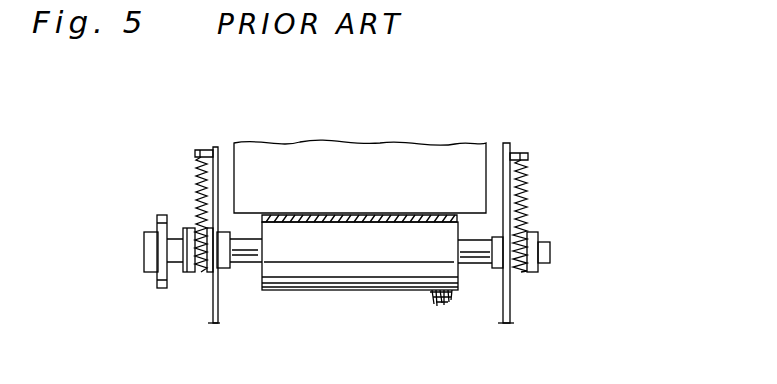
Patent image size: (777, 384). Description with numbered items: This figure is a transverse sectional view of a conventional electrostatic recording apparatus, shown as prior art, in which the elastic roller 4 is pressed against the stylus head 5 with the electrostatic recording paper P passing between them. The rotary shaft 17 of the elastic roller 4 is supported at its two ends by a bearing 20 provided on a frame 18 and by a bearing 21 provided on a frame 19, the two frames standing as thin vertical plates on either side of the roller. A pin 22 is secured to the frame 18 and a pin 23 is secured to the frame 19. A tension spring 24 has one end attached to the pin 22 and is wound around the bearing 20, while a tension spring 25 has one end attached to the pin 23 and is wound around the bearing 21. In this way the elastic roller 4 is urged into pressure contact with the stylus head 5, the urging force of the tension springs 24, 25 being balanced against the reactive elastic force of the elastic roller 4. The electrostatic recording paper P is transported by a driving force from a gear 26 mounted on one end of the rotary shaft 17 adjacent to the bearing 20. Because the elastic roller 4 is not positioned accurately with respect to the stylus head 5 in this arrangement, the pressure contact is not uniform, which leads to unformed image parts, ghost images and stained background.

The elastic roller 4 is at (368, 280).
The stylus head 5 is at (470, 160).
The electrostatic recording paper P is at (366, 212).
The rotary shaft 17 is at (470, 266).
The frame 18 is at (210, 300).
The frame 19 is at (510, 300).
The bearing 20 is at (228, 267).
The bearing 21 is at (497, 265).
The pin 22 is at (198, 150).
The pin 23 is at (528, 152).
The tension spring 24 is at (200, 190).
The tension spring 25 is at (528, 192).
The gear 26 is at (158, 276).